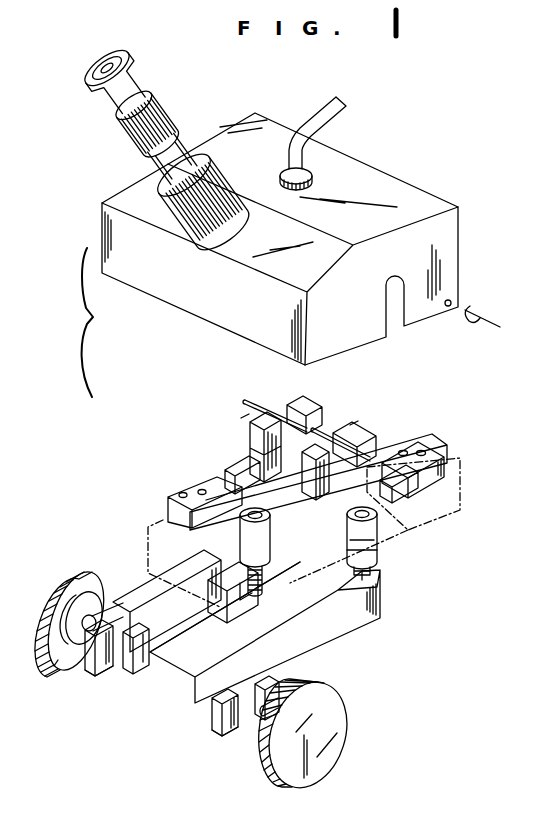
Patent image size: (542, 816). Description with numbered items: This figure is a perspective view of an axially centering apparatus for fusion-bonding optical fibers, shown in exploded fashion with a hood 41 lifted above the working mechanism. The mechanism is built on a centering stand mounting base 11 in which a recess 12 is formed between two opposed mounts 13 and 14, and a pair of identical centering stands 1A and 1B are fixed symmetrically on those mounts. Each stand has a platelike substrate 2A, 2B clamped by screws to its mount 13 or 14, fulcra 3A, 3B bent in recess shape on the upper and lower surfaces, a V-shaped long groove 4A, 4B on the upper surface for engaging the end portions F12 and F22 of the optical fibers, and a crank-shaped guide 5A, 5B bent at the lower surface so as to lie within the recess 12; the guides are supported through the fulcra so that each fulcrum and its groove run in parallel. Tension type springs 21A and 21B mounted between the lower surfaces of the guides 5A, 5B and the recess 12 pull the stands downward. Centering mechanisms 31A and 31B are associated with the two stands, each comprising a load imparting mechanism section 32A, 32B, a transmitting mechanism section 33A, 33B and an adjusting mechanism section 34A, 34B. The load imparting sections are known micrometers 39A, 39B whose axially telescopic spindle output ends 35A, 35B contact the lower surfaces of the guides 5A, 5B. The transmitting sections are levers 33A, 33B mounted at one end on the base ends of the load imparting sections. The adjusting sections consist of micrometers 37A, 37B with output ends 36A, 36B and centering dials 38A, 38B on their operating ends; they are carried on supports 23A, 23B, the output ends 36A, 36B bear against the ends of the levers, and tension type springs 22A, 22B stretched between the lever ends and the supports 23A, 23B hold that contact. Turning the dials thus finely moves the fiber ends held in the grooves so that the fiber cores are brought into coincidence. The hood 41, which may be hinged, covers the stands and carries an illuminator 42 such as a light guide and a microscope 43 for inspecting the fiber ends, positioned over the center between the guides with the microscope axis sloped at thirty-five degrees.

The hood 41 is at (388, 168).
The illuminator 42 is at (317, 123).
The microscope 43 is at (190, 135).
The centering stand mounting base 11 is at (467, 497).
The recess 12 is at (308, 535).
The mount 13 is at (463, 458).
The mount 14 is at (148, 526).
The centering stand 1A is at (350, 426).
The centering stand 1B is at (243, 417).
The substrate 2A is at (430, 448).
The substrate 2B is at (180, 498).
The fulcrum 3A is at (455, 500).
The fulcrum 3B is at (228, 473).
The V-shaped long groove 4A is at (372, 418).
The V-shaped long groove 4B is at (316, 412).
The guide 5A is at (385, 513).
The guide 5B is at (257, 458).
The end portion of optical fiber F12 is at (385, 434).
The end portion of optical fiber F22 is at (258, 402).
The tension type spring 21A is at (357, 553).
The tension type spring 21B is at (288, 500).
The tension type spring 22A is at (277, 668).
The tension type spring 22B is at (148, 667).
The support 23A is at (218, 743).
The support 23B is at (90, 675).
The centering mechanism 31A is at (200, 720).
The centering mechanism 31B is at (132, 680).
The load imparting mechanism section 32A is at (383, 555).
The load imparting mechanism section 32B is at (220, 553).
The transmitting mechanism section 33A is at (373, 615).
The transmitting mechanism section 33B is at (177, 653).
The adjusting mechanism section 34A is at (245, 747).
The adjusting mechanism section 34B is at (42, 662).
The output end 35A is at (370, 533).
The output end 35B is at (243, 525).
The output end 36A is at (163, 735).
The output end 36B is at (107, 672).
The micrometer 37A is at (296, 732).
The micrometer 37B is at (98, 605).
The centering dial 38A is at (338, 722).
The centering dial 38B is at (63, 570).
The micrometer 39A is at (382, 543).
The micrometer 39B is at (187, 577).